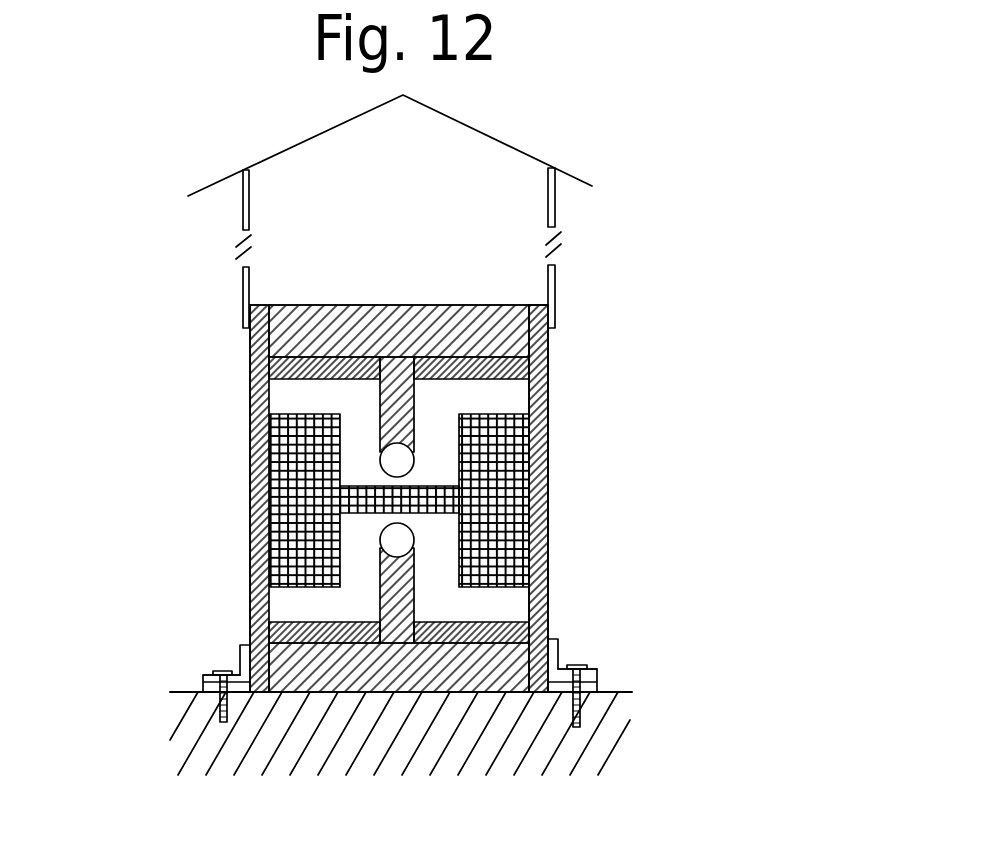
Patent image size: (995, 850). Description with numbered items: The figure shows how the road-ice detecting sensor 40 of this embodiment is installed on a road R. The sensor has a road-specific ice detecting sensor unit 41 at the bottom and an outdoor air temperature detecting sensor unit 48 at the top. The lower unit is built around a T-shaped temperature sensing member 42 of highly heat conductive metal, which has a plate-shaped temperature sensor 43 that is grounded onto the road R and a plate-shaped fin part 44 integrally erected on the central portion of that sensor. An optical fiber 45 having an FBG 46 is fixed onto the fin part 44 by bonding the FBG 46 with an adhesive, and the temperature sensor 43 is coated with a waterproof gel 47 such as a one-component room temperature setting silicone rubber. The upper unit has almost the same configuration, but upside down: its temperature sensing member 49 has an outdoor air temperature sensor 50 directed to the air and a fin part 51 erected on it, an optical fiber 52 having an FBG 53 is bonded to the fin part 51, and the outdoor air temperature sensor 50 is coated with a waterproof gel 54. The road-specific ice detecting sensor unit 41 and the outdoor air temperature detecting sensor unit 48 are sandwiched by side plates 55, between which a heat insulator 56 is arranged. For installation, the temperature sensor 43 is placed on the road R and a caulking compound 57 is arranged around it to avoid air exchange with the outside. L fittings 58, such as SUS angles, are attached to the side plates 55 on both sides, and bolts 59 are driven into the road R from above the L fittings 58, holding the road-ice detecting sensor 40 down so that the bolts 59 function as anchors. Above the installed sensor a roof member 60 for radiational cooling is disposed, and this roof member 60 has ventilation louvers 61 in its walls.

The road-ice detecting sensor 40 is at (454, 286).
The road-specific ice detecting sensor unit 41 is at (513, 614).
The temperature sensing member 42 is at (550, 622).
The temperature sensor 43 is at (560, 655).
The fin part 44 is at (417, 600).
The optical fiber 45 is at (371, 535).
The FBG 46 is at (370, 522).
The waterproof gel 47 is at (290, 617).
The outdoor air temperature detecting sensor unit 48 is at (464, 396).
The temperature sensing member 49 is at (287, 333).
The outdoor air temperature sensor 50 is at (552, 318).
The fin part 51 is at (300, 365).
The optical fiber 52 is at (368, 437).
The FBG 53 is at (372, 449).
The waterproof gel 54 is at (540, 343).
The side plates 55 is at (303, 462).
The heat insulator 56 is at (548, 445).
The caulking compound 57 is at (203, 675).
The L fittings 58 is at (240, 645).
The bolts 59 is at (222, 672).
The roof member 60 is at (256, 159).
The ventilation louvers 61 is at (240, 248).
The road R is at (165, 681).